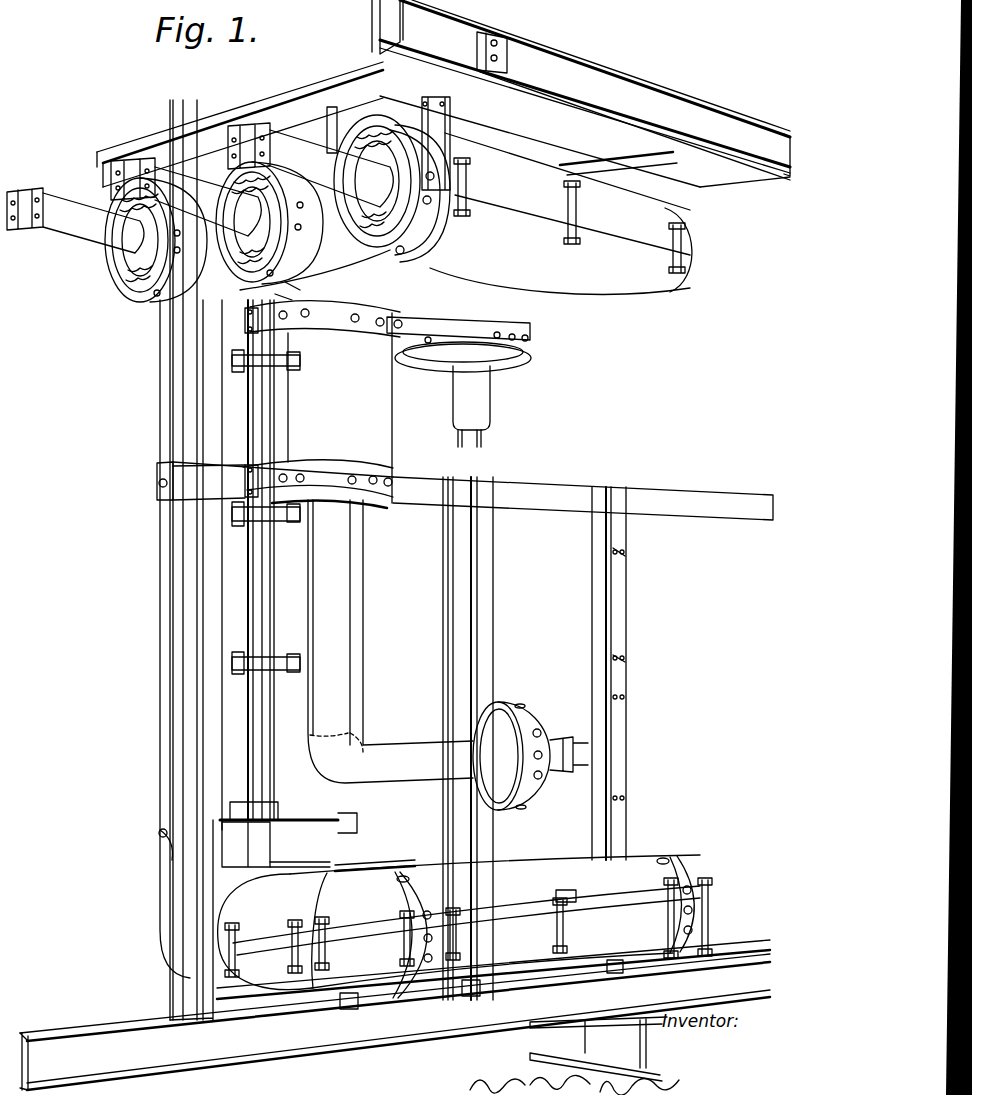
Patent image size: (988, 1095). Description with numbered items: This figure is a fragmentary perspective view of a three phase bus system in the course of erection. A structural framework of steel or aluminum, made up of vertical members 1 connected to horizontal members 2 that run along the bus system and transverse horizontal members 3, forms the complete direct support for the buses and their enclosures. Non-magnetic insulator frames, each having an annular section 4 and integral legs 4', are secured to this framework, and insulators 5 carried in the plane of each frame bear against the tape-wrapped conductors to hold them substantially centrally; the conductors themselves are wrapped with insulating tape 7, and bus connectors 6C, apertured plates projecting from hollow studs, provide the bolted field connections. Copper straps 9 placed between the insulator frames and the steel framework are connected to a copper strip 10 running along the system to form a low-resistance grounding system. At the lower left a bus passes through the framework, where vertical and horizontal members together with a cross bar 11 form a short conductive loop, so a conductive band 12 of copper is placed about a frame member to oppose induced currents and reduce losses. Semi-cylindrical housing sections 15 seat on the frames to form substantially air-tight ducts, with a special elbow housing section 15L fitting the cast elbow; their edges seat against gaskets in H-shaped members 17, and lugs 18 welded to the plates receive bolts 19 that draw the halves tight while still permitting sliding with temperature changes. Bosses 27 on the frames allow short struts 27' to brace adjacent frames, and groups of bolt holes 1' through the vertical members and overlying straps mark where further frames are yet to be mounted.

The vertical members 1 is at (398, 560).
The bolt holes 1' is at (636, 616).
The horizontal members 2 is at (372, 9).
The transverse horizontal members 3 is at (305, 90).
The annular section 4 is at (356, 499).
The integral legs 4' is at (336, 475).
The insulators 5 is at (118, 278).
The bus connectors 6C is at (112, 178).
The insulating tape 7 is at (300, 140).
The copper straps 9 is at (507, 66).
The copper strip 10 is at (378, 31).
The cross bar 11 is at (286, 824).
The conductive band 12 is at (268, 845).
The housing sections 15 is at (392, 396).
The elbow housing section 15L is at (613, 300).
The H-shaped members 17 is at (358, 944).
The lugs 18 is at (562, 898).
The bolts 19 is at (243, 950).
The bosses 27 is at (358, 615).
The short struts 27' is at (458, 322).